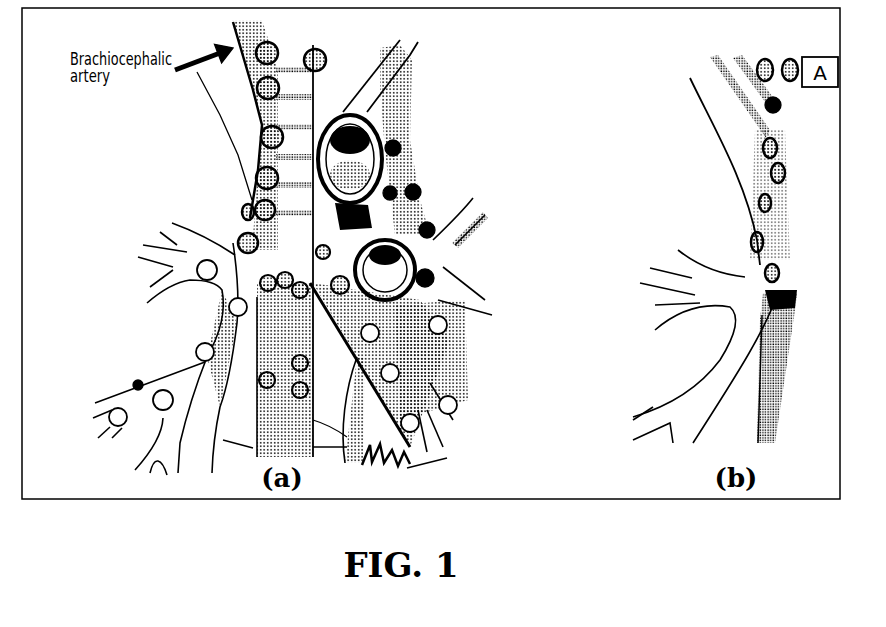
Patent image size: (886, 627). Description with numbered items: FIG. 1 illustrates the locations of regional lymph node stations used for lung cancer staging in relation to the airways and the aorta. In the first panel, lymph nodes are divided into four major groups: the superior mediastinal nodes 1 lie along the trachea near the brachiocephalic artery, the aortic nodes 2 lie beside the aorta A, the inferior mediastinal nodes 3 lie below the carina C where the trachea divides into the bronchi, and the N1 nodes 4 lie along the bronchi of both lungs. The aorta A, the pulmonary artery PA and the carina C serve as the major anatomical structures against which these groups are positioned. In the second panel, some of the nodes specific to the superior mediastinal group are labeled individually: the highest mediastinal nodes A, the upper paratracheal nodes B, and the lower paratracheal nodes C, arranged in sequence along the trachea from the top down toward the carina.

The superior mediastinal nodes 1 is at (240, 147).
The aortic nodes 2 is at (426, 141).
The inferior mediastinal nodes 3 is at (303, 351).
The N1 nodes 4 is at (288, 346).
The aorta A is at (350, 172).
The upper paratracheal nodes B is at (795, 112).
The carina C is at (539, 237).
The pulmonary artery PA is at (394, 270).